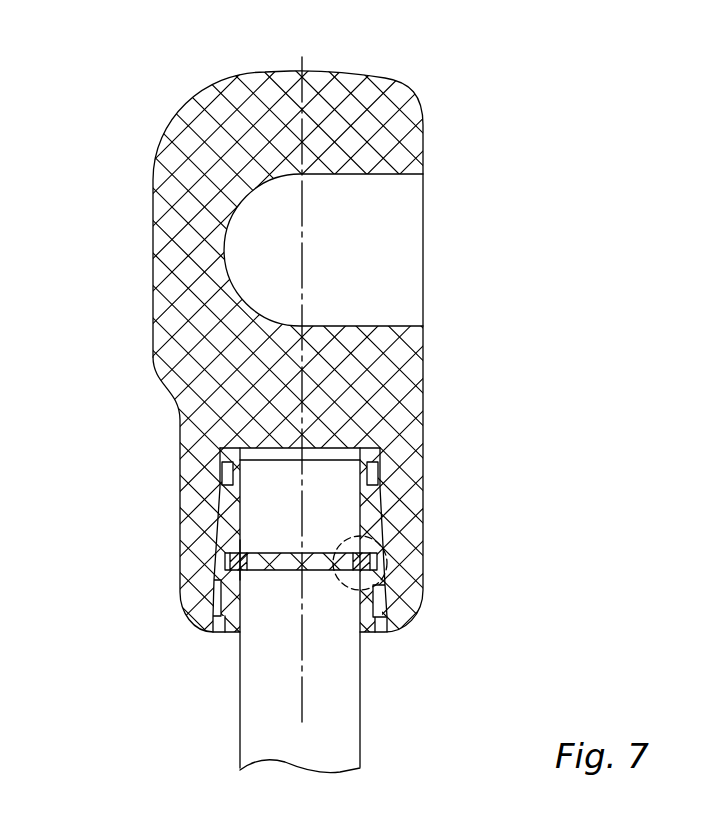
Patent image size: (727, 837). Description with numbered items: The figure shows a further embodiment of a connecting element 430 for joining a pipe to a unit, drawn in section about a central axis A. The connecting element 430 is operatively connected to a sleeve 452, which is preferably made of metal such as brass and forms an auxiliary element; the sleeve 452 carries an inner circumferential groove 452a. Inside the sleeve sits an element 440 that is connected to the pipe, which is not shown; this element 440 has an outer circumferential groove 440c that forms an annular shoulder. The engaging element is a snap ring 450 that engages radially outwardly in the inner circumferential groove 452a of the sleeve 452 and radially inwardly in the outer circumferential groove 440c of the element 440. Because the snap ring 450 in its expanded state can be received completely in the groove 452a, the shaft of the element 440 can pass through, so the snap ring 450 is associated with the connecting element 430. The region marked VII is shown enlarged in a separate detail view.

The connecting element 430 is at (418, 110).
The element connected to the pipe 440 is at (253, 742).
The outer circumferential groove 440c is at (275, 563).
The snap ring 450 is at (213, 590).
The sleeve 452 is at (382, 487).
The inner circumferential groove 452a is at (390, 553).
The detail VII is at (355, 588).
The central axis A is at (302, 60).